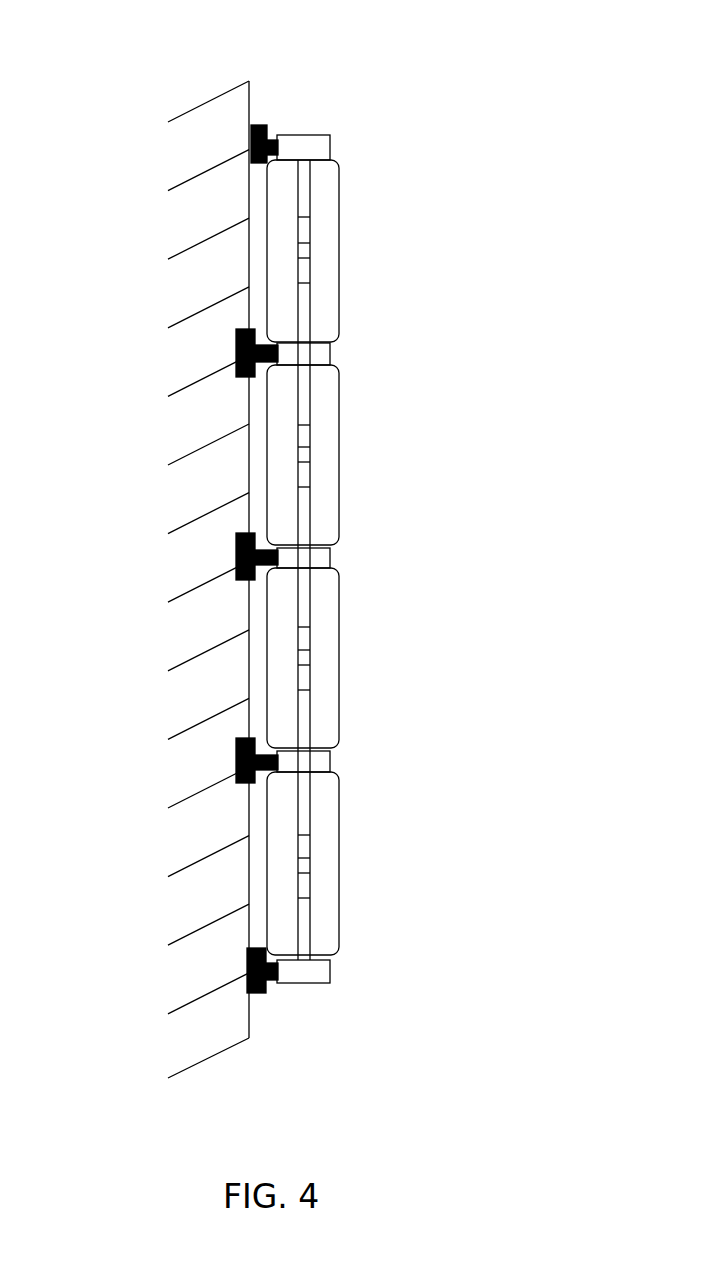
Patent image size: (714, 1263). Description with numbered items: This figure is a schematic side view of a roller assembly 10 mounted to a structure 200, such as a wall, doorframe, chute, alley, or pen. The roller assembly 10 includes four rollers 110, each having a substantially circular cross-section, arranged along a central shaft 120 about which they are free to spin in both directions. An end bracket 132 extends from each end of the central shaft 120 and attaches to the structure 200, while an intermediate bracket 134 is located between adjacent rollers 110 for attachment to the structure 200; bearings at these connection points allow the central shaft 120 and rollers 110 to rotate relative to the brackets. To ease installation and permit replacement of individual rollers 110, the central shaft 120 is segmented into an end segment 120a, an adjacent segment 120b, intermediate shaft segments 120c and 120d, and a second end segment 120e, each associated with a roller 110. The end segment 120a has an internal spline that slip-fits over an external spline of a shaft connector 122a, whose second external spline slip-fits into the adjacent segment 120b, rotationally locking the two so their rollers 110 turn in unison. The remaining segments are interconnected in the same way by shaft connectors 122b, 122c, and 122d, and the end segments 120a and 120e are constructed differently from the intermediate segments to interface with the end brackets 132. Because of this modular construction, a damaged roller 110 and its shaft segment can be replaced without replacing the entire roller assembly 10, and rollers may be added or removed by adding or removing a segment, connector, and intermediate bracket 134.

The structure 200 is at (113, 56).
The roller assembly 10 is at (422, 547).
The end bracket 132 is at (293, 133).
The central shaft 120 is at (378, 544).
The roller 110 is at (330, 185).
The end segment 120a is at (310, 205).
The shaft connector 122a is at (310, 227).
The adjacent segment 120b is at (302, 327).
The intermediate bracket 134 is at (322, 358).
The shaft connector 122b is at (310, 435).
The intermediate shaft segment 120c is at (302, 508).
The shaft connector 122c is at (310, 643).
The intermediate shaft segment 120d is at (302, 713).
The shaft connector 122d is at (310, 850).
The end segment 120e is at (310, 933).